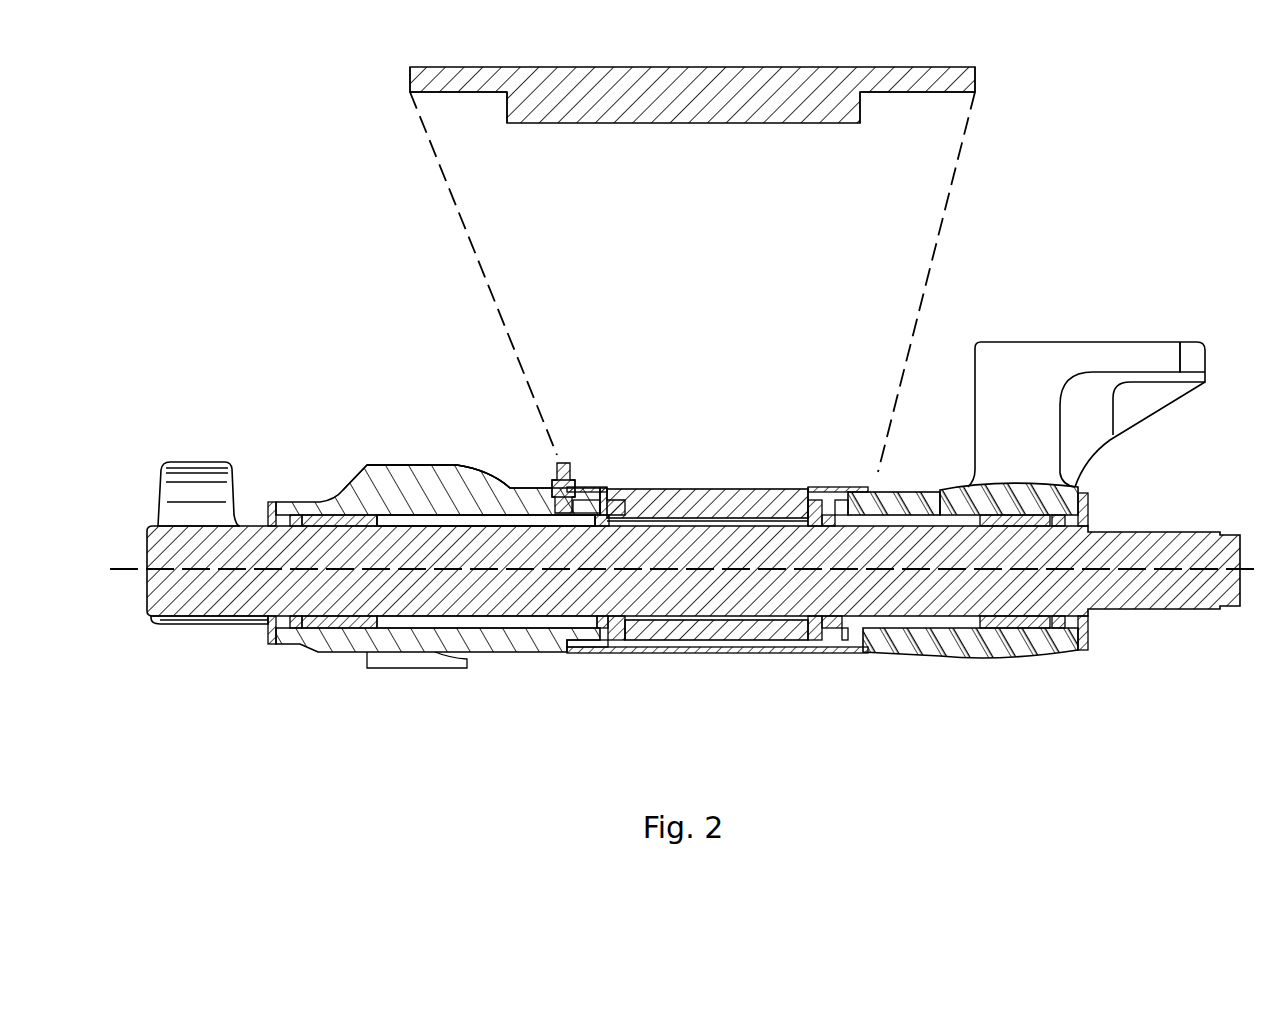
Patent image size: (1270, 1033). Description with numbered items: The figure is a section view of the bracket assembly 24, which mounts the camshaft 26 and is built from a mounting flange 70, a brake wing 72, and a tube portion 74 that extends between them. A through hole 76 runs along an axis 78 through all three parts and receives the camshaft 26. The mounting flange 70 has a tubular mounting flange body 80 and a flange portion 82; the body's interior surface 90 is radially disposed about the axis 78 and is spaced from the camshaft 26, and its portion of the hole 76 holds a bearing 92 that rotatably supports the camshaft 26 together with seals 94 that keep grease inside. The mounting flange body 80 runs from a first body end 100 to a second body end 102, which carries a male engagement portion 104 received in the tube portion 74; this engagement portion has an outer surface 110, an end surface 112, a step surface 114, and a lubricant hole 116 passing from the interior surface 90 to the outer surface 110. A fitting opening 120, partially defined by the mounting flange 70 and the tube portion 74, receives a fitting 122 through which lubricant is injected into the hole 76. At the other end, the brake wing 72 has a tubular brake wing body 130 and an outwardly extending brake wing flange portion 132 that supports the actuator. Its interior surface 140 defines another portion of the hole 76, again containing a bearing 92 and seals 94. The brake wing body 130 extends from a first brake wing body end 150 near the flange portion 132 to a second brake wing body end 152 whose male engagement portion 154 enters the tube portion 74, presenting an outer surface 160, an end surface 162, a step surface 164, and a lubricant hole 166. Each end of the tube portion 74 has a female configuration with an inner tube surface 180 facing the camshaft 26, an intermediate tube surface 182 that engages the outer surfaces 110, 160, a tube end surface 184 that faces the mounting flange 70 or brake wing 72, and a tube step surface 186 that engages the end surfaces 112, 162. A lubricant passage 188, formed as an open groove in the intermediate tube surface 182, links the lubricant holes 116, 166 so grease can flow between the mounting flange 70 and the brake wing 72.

The bracket assembly 24 is at (312, 352).
The camshaft 26 is at (1182, 612).
The mounting flange 70 is at (330, 482).
The brake wing 72 is at (968, 330).
The tube portion 74 is at (735, 55).
The hole 76 is at (448, 500).
The axis 78 is at (112, 569).
The mounting flange body 80 is at (500, 488).
The flange portion 82 is at (466, 464).
The interior surface 90 is at (395, 514).
The bearing 92 is at (355, 632).
The seal 94 is at (295, 632).
The first body end 100 is at (280, 658).
The second body end 102 is at (608, 482).
The engagement portion 104 is at (624, 658).
The outer surface 110 is at (600, 513).
The end surface 112 is at (640, 496).
The step surface 114 is at (562, 652).
The lubricant hole 116 is at (583, 645).
The fitting opening 120 is at (550, 482).
The fitting 122 is at (565, 462).
The brake wing body 130 is at (880, 493).
The brake wing flange portion 132 is at (1062, 342).
The interior surface 140 is at (935, 500).
The first brake wing body end 150 is at (1092, 655).
The second brake wing body end 152 is at (812, 500).
The engagement portion 154 is at (805, 660).
The outer surface 160 is at (810, 485).
The end surface 162 is at (805, 520).
The step surface 164 is at (844, 500).
The lubricant hole 166 is at (848, 645).
The inner tube surface 180 is at (716, 489).
The intermediate tube surface 182 is at (492, 93).
The tube end surface 184 is at (410, 75).
The tube step surface 186 is at (507, 120).
The lubricant passage 188 is at (710, 642).